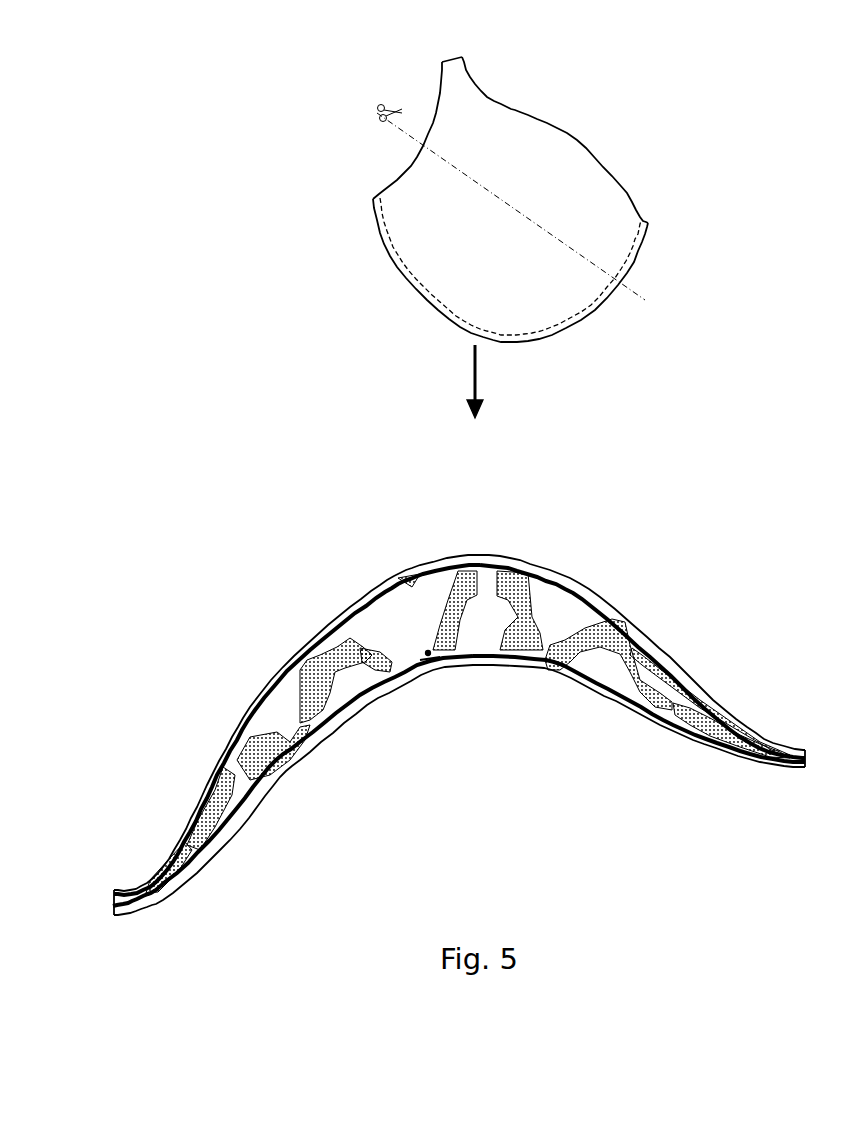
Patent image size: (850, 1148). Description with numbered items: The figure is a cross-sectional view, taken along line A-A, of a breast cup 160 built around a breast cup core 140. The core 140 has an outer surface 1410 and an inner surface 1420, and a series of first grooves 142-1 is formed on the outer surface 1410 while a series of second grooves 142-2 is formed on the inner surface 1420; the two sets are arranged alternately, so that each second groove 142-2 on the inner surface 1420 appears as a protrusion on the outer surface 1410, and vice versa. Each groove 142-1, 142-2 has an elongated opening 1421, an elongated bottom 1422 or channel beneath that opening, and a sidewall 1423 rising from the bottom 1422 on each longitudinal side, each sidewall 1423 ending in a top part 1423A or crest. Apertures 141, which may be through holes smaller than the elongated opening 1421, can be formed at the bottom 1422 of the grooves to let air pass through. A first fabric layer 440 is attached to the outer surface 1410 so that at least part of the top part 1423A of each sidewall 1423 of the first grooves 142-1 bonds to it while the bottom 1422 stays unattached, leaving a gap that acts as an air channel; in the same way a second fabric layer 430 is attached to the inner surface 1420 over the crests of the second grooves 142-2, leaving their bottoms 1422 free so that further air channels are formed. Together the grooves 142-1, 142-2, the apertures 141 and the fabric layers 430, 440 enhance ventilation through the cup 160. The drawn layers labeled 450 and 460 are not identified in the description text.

The breast cup 160 is at (588, 175).
The breast cup core 140 is at (685, 633).
The outer surface 1410 is at (207, 800).
The inner surface 1420 is at (738, 748).
The elongated opening 1421 is at (402, 595).
The elongated bottom 1422 is at (430, 660).
The sidewall 1423 is at (380, 648).
The top part 1423A is at (362, 622).
The aperture 141 is at (425, 660).
The first groove 142-1 is at (547, 597).
The second groove 142-2 is at (597, 643).
The second fabric layer 430 is at (622, 697).
The first fabric layer 440 is at (613, 613).
The lower fabric layer 450 is at (303, 733).
The upper fabric layer 460 is at (307, 653).